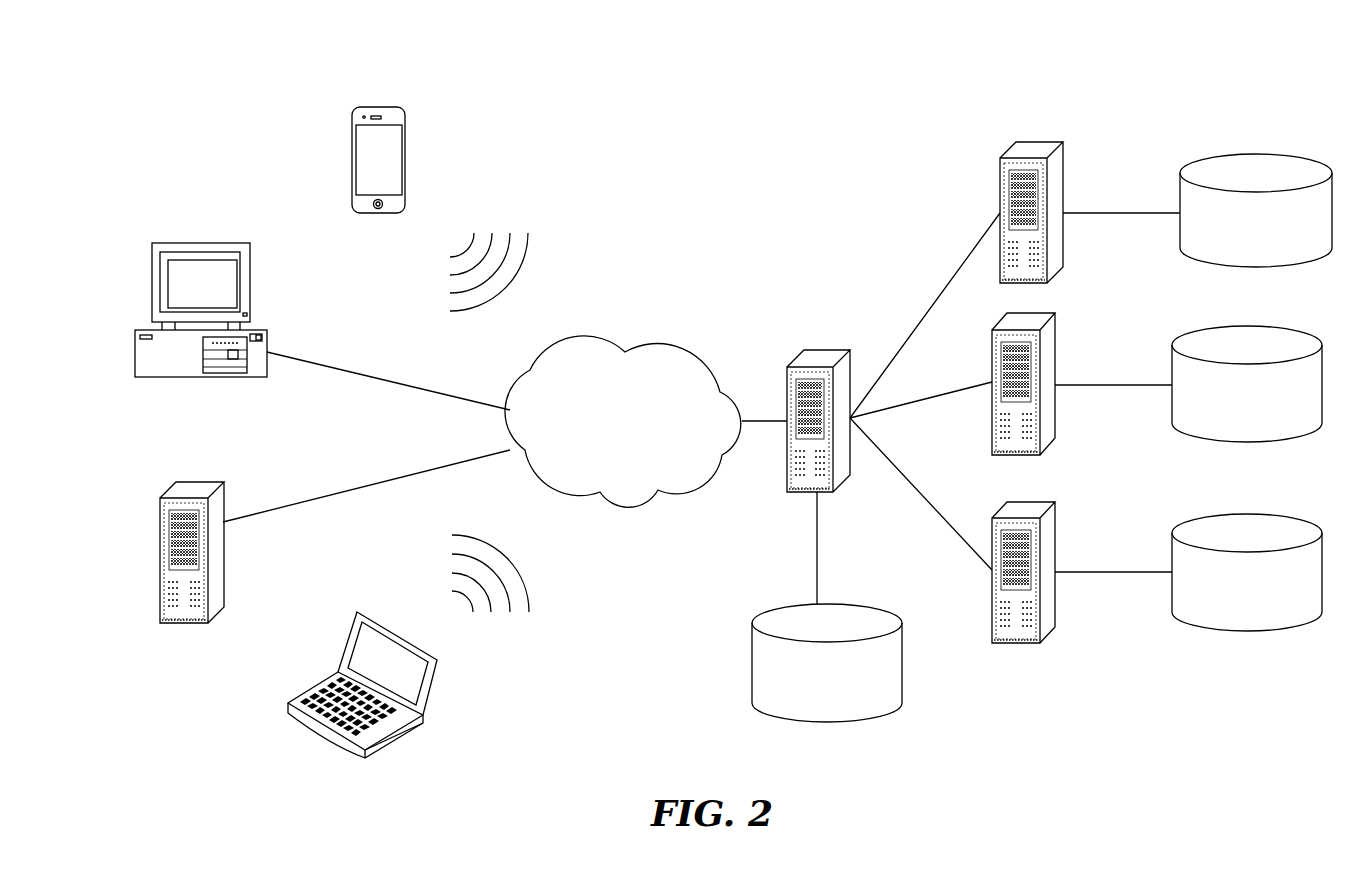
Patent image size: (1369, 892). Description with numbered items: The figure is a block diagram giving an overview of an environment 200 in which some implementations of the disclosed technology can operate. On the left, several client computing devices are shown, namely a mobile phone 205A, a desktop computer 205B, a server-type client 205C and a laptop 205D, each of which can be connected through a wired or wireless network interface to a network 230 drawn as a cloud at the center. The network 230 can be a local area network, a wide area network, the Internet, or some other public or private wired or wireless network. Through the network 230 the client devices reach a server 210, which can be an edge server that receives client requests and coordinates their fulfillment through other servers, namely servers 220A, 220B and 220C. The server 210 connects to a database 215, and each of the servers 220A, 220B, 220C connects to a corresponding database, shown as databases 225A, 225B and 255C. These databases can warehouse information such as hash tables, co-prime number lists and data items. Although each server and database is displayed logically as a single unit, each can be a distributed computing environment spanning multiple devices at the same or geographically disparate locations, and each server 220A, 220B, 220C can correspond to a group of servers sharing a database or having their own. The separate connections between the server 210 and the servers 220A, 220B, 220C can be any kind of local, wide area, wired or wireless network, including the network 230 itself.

The environment 200 is at (840, 112).
The client computing device 205A is at (395, 104).
The client computing device 205B is at (243, 244).
The client computing device 205C is at (213, 483).
The client computing device 205D is at (431, 687).
The server 210 is at (830, 350).
The database 215 is at (878, 611).
The server 220A is at (1063, 143).
The server 220B is at (1055, 313).
The server 220C is at (1055, 502).
The database 225A is at (1255, 154).
The database 225B is at (1247, 326).
The database 255C is at (1247, 514).
The network 230 is at (678, 341).